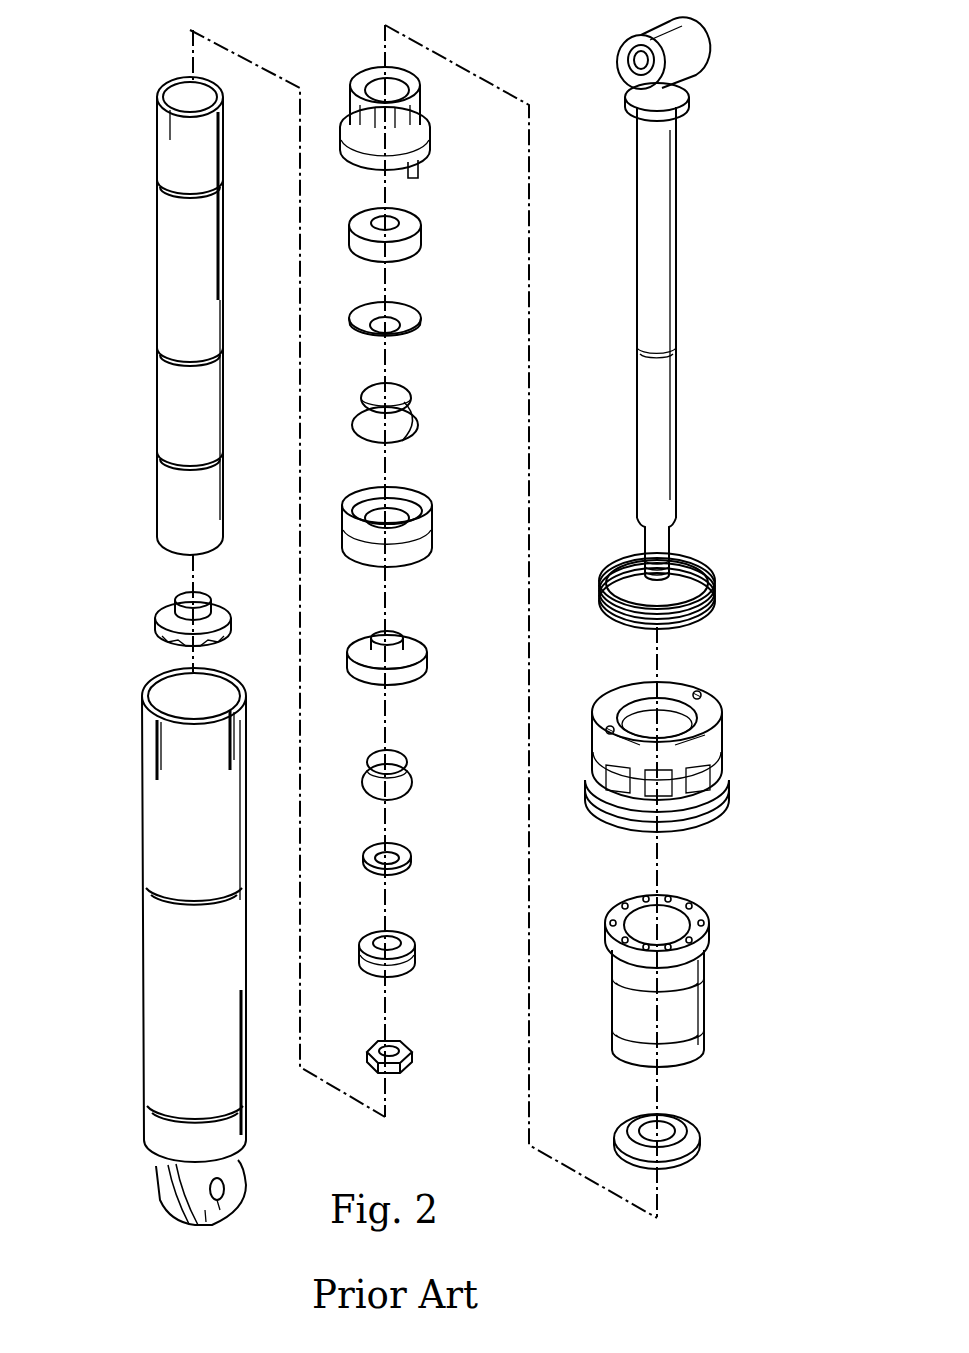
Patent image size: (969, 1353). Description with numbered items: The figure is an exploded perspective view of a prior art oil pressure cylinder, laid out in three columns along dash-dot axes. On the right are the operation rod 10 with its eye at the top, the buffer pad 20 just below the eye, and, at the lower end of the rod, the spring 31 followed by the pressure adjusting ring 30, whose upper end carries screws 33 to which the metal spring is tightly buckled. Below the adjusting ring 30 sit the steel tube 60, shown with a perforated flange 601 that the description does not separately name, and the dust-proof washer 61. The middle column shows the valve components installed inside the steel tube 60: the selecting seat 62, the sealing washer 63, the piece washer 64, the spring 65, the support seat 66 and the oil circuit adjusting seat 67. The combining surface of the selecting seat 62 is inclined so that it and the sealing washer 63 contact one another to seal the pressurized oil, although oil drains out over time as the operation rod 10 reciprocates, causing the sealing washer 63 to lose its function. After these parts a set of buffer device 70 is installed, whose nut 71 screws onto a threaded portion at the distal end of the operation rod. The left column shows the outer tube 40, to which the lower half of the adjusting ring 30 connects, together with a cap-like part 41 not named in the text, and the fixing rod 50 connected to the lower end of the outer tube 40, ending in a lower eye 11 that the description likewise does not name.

The operation rod 10 is at (700, 34).
The buffer pad 20 is at (690, 97).
The spring 31 is at (714, 575).
The pressure adjusting ring 30 is at (722, 713).
The screws 33 is at (703, 697).
The outer tube 40 is at (170, 246).
The cap 41 is at (163, 600).
The fixing rod 50 is at (150, 814).
The lower eye 11 is at (158, 1180).
The selecting seat 62 is at (430, 128).
The sealing washer 63 is at (410, 222).
The piece washer 64 is at (418, 308).
The spring 65 is at (418, 418).
The support seat 66 is at (432, 498).
The oil circuit adjusting seat 67 is at (428, 645).
The buffer device 70 is at (423, 752).
The nut 71 is at (412, 1060).
The steel tube 60 is at (688, 1000).
The flange 601 is at (708, 922).
The dust-proof washer 61 is at (700, 1128).